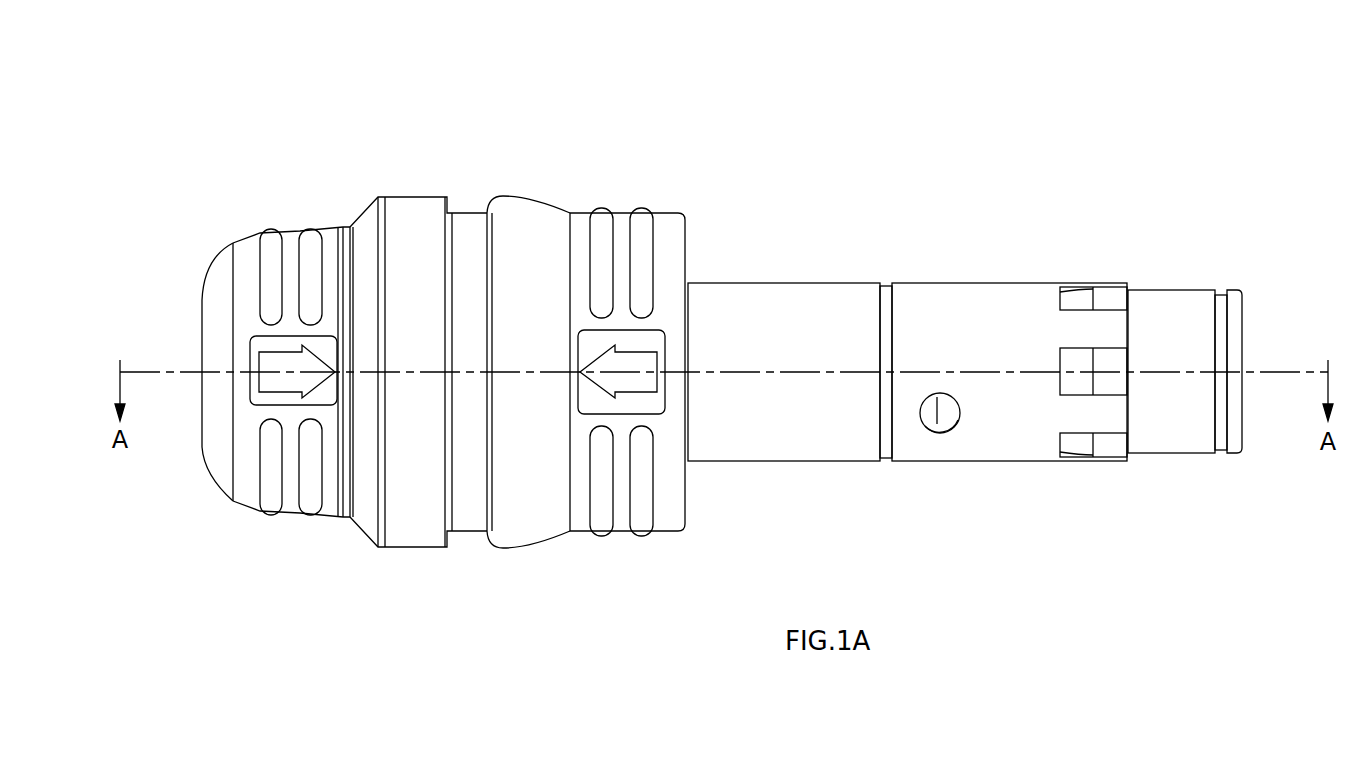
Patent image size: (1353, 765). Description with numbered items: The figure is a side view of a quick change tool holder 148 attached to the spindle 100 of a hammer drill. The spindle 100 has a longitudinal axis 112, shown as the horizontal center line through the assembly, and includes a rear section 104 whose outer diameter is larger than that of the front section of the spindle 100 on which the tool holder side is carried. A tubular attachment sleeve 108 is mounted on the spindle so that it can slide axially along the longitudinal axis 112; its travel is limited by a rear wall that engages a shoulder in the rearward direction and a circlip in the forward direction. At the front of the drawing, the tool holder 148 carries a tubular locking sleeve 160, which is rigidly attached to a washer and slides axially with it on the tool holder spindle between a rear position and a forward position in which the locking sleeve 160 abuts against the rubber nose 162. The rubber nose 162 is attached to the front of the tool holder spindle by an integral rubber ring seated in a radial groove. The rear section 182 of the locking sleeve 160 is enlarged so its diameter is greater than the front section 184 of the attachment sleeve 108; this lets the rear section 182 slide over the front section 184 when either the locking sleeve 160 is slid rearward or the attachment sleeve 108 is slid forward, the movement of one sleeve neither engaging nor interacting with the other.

The spindle 100 is at (1050, 480).
The rear section 104 is at (812, 302).
The attachment sleeve 108 is at (622, 225).
The longitudinal axis 112 is at (992, 372).
The tool holder 148 is at (225, 180).
The locking sleeve 160 is at (271, 482).
The rubber nose 162 is at (213, 308).
The rear section 182 is at (413, 208).
The front section 184 is at (470, 225).